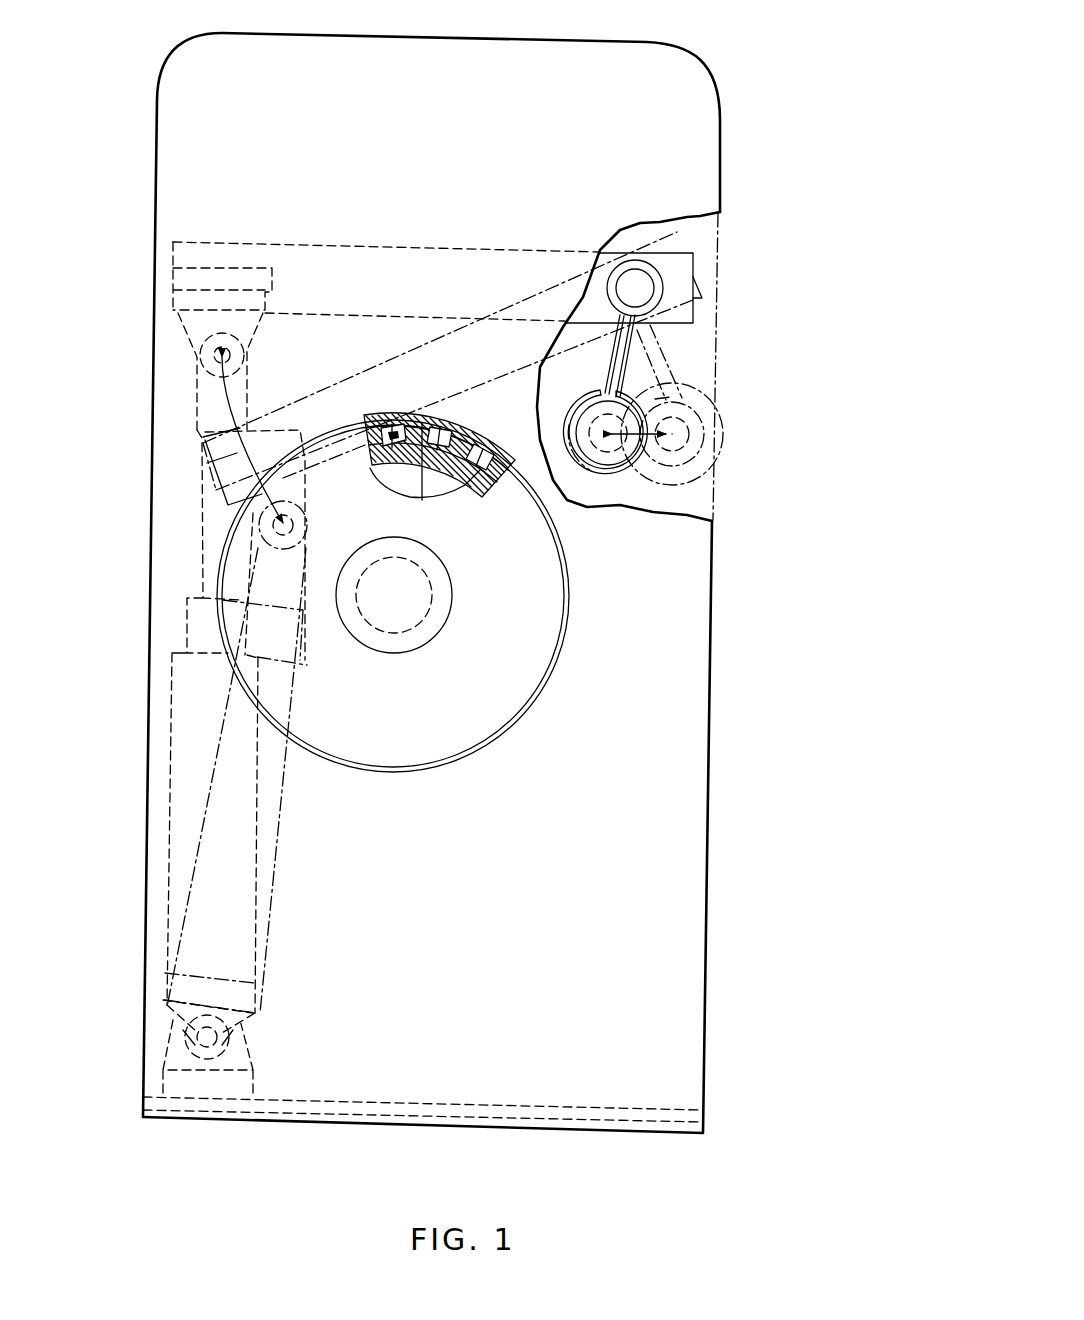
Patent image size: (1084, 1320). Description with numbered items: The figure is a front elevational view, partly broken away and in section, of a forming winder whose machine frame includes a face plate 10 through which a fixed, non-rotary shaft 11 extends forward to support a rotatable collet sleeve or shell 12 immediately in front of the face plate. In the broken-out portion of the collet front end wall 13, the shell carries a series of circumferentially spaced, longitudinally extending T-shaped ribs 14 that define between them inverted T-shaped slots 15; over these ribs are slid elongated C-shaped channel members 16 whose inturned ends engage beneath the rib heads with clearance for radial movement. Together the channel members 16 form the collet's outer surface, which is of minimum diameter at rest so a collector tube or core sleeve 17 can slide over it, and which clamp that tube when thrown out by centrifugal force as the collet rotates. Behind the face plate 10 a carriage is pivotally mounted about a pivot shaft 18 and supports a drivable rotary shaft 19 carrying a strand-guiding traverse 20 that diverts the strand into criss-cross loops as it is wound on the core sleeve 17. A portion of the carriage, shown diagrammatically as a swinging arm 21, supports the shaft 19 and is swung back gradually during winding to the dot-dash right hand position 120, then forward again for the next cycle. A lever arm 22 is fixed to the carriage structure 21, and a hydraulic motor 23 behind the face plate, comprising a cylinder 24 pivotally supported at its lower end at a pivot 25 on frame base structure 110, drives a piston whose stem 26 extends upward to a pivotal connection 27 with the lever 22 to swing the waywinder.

The face plate 10 is at (488, 134).
The fixed, non-rotary shaft 11 is at (424, 598).
The collet sleeve or shell 12 is at (475, 488).
The collet front end wall 13 is at (493, 704).
The T-shaped ribs 14 is at (403, 442).
The inverted T-shaped slots 15 is at (464, 470).
The C-shaped channel members 16 is at (393, 421).
The collector tube or core sleeve 17 is at (440, 772).
The pivot shaft 18 is at (636, 288).
The drivable rotary shaft 19 is at (679, 404).
The strand-guiding traverse 20 is at (595, 390).
The swinging arm 21 is at (631, 353).
The lever arm 22 is at (672, 260).
The hydraulic motor 23 is at (168, 798).
The cylinder 24 is at (185, 846).
The pivotal support 25 is at (184, 1037).
The piston stem 26 is at (200, 568).
The pivotal connection 27 is at (222, 356).
The frame base structure 110 is at (513, 1116).
The right hand position 120 is at (723, 434).